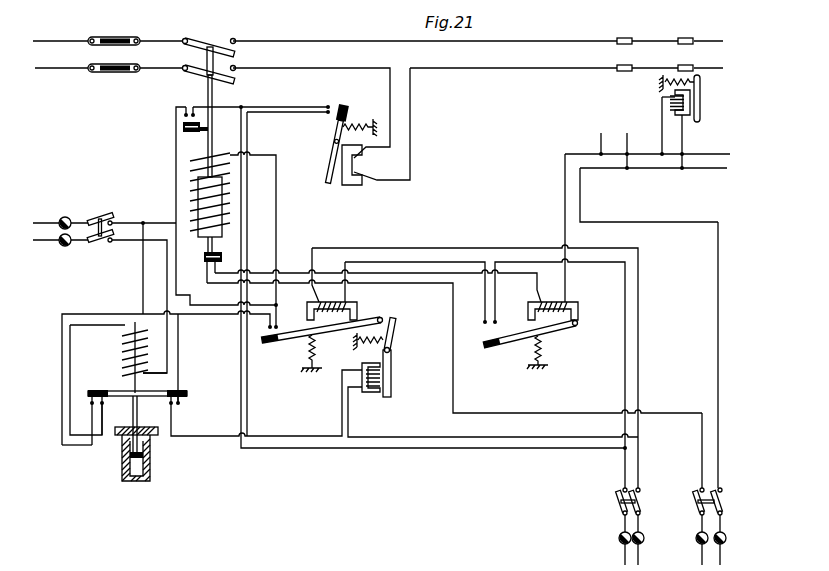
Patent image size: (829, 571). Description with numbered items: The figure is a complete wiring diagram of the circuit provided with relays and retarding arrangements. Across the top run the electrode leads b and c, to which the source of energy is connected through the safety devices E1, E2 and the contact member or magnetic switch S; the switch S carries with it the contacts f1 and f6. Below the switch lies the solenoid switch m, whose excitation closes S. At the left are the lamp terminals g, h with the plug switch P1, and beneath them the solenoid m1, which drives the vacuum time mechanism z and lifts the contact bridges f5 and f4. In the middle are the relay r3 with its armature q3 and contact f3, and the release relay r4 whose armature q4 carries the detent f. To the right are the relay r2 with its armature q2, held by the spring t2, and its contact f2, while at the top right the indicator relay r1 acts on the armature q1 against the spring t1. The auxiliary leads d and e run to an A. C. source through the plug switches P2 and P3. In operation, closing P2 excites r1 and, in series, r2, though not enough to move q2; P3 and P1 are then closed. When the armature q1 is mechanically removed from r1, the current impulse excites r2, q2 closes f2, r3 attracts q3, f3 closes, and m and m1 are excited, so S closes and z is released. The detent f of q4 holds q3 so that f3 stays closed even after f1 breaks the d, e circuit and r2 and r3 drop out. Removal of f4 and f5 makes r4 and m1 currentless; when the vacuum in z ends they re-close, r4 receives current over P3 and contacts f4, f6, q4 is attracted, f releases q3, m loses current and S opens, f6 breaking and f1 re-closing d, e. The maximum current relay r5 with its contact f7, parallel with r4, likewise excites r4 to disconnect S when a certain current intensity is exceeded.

The electrode lead b is at (378, 33).
The electrode lead c is at (379, 122).
The magnetic switch S is at (209, 100).
The electrodes E1 is at (655, 30).
The electrodes E2 is at (647, 80).
The contact f6 is at (190, 109).
The solenoid switch m is at (198, 189).
The contact f1 is at (201, 260).
The lamp terminal g is at (60, 216).
The lamp terminal h is at (60, 248).
The switch P1 is at (100, 242).
The solenoid m1 is at (118, 357).
The contact bridge f5 is at (104, 417).
The contact bridge f4 is at (166, 408).
The vacuum time mechanism z is at (142, 454).
The relay r3 is at (339, 284).
The contact f3 is at (280, 331).
The armature q3 is at (322, 344).
The detent f is at (396, 323).
The armature q4 is at (392, 370).
The release relay r4 is at (372, 395).
The contact f2 is at (477, 329).
The armature q2 is at (557, 331).
The spring t2 is at (530, 350).
The relay r2 is at (561, 237).
The indicator relay r1 is at (676, 116).
The spring t1 is at (665, 78).
The armature q1 is at (710, 106).
The maximum current relay r5 is at (372, 160).
The contact f7 is at (346, 135).
The auxiliary lead e is at (694, 450).
The auxiliary lead d is at (728, 355).
The switch P3 is at (618, 526).
The switch P2 is at (720, 526).